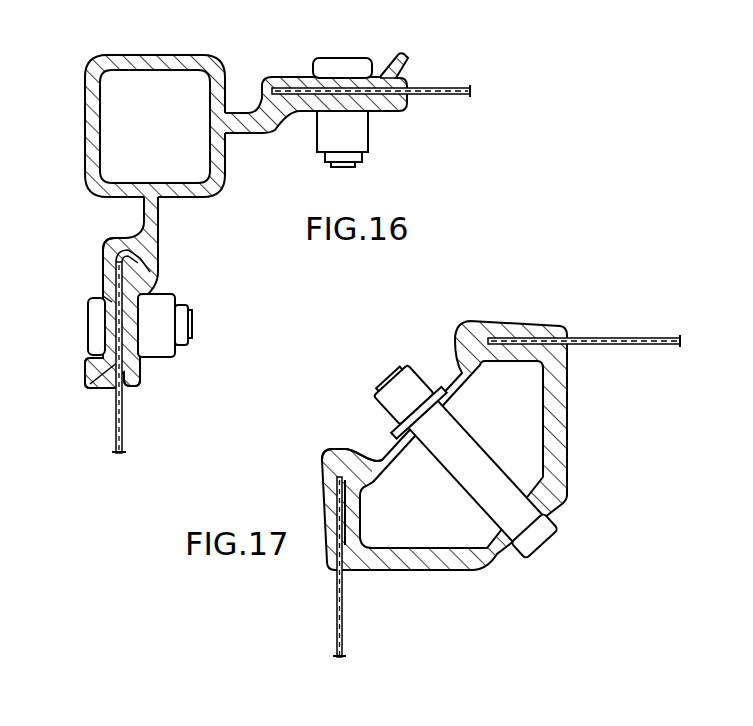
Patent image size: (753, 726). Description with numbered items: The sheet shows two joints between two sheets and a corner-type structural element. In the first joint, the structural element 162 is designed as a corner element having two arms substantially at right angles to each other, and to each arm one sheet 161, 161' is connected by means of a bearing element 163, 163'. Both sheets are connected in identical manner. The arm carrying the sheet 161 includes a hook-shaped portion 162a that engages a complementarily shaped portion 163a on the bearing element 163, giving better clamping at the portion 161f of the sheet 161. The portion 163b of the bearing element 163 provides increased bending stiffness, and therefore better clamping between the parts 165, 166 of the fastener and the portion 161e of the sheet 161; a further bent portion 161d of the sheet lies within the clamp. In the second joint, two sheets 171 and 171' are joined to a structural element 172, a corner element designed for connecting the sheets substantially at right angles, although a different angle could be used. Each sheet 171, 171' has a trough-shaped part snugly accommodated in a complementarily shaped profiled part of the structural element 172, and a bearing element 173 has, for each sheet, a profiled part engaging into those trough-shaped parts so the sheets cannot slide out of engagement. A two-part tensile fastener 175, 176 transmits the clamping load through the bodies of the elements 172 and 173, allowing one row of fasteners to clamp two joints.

In FIG. 16, the structural element 162 is at (96, 70).
In FIG. 16, the bearing element 163' is at (354, 95).
In FIG. 16, the sheet 161' is at (403, 73).
In FIG. 16, the complementarily shaped portion 163a is at (128, 236).
In FIG. 16, the hook-shaped portion 162a is at (159, 248).
In FIG. 16, the bearing element 163 is at (99, 292).
In FIG. 16, the portion of the sheet 161f is at (153, 282).
In FIG. 16, the rod bent portion 161d is at (103, 296).
In FIG. 16, the fastener part 166 is at (178, 300).
In FIG. 16, the fastener part 165 is at (88, 322).
In FIG. 16, the portion of the bearing element 163b is at (88, 375).
In FIG. 16, the portion of the sheet 161e is at (138, 366).
In FIG. 16, the sheet 161 is at (93, 351).
In FIG. 17, the tensile fastener part 176 is at (407, 393).
In FIG. 17, the bearing element 173 is at (338, 450).
In FIG. 17, the sheet 171' is at (584, 321).
In FIG. 17, the tensile fastener part 175 is at (546, 536).
In FIG. 17, the structural element 172 is at (440, 572).
In FIG. 17, the sheet 171 is at (308, 567).